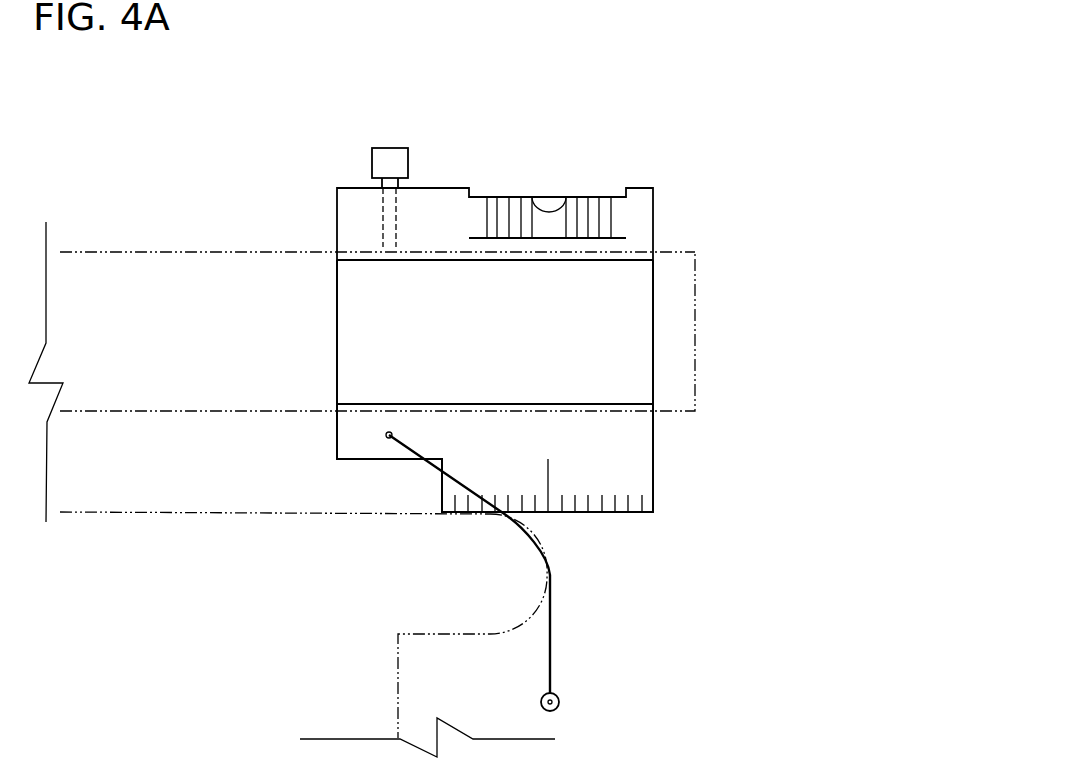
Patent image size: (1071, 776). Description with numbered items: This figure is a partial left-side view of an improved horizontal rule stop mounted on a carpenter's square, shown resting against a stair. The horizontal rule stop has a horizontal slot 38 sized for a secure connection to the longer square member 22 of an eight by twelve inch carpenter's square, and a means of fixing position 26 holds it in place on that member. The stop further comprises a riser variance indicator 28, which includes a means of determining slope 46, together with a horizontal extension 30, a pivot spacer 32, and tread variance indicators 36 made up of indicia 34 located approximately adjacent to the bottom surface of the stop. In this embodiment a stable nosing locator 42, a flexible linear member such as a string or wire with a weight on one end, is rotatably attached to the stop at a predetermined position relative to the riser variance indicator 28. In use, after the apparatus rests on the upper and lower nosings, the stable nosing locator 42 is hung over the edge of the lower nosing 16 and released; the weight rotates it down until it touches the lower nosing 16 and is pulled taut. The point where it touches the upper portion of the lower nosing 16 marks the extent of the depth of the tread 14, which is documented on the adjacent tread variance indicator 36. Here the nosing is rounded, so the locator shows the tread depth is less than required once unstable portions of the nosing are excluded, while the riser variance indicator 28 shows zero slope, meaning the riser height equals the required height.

The tread 14 is at (177, 510).
The lower nosing 16 is at (505, 517).
The longer square member 22 is at (105, 252).
The means of fixing position 26 is at (390, 148).
The riser variance indicator 28 is at (537, 386).
The horizontal extension 30 is at (460, 330).
The pivot spacer 32 is at (653, 454).
The indicia 34 is at (548, 477).
The tread variance indicator 36 is at (628, 547).
The horizontal slot 38 is at (335, 312).
The stable nosing locator 42 is at (552, 622).
The means of determining slope 46 is at (550, 196).